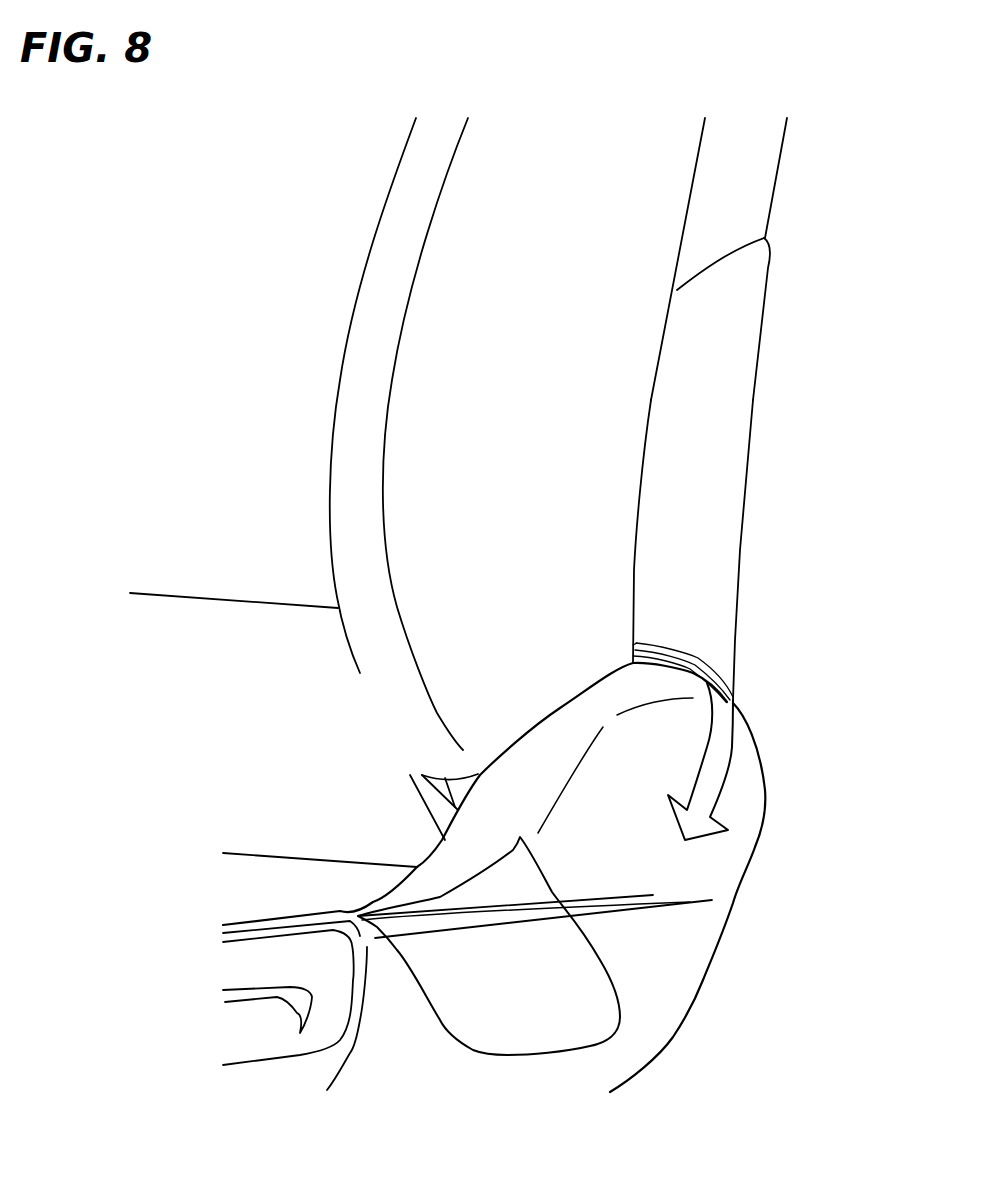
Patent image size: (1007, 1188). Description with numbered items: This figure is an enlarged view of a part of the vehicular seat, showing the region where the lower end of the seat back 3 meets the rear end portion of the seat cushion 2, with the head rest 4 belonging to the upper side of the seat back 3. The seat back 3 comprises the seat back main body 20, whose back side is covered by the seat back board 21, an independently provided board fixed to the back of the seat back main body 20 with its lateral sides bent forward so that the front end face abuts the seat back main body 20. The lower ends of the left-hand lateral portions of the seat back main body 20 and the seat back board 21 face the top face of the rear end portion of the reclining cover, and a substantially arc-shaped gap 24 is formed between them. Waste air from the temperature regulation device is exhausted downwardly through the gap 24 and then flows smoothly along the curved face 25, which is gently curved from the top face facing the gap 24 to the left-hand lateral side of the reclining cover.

The seat cushion 2 is at (172, 908).
The seat back 3 is at (781, 183).
The head rest 4 is at (667, 968).
The seat back main body 20 is at (600, 370).
The seat back board 21 is at (708, 576).
The gap 24 is at (693, 665).
The curved face 25 is at (742, 716).